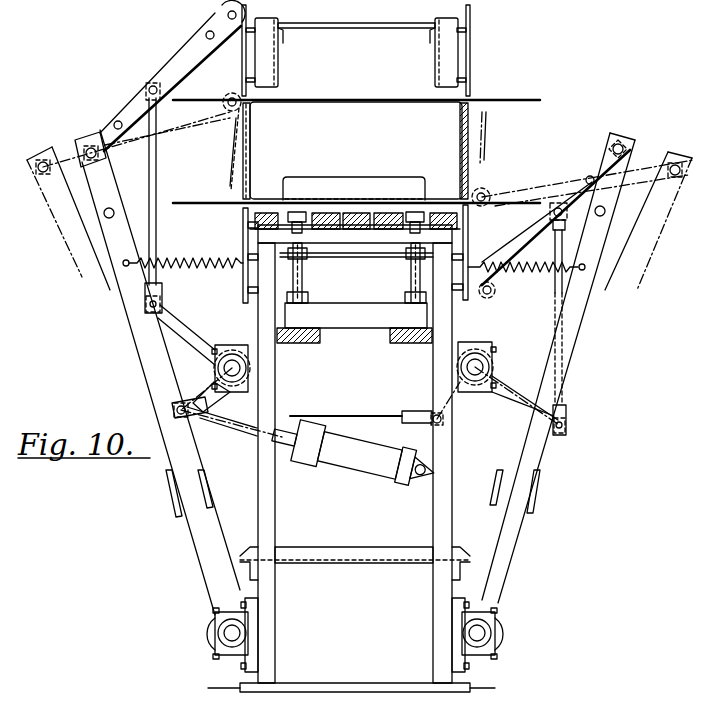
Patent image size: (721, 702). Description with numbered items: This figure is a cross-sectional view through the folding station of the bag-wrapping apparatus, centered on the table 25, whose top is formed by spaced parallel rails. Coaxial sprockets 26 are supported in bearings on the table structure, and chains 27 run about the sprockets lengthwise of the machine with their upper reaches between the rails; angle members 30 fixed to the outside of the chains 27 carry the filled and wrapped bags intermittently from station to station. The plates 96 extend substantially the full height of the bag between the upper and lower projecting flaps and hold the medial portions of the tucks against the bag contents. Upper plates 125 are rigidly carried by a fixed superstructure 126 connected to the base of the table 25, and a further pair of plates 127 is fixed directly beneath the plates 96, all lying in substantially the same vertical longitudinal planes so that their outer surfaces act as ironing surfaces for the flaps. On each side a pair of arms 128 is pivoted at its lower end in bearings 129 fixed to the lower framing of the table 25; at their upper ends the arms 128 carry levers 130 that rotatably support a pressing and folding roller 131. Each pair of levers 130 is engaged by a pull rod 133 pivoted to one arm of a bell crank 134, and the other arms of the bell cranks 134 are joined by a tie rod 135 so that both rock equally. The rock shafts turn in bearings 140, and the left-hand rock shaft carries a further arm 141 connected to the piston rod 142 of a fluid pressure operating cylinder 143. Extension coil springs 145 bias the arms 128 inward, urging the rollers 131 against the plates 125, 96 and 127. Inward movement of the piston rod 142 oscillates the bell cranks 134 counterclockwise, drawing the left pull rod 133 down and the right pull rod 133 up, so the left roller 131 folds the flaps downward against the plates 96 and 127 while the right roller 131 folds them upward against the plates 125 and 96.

The table 25 is at (272, 189).
The sprockets 26 is at (410, 272).
The chains 27 is at (302, 200).
The angle members 30 is at (407, 183).
The plates 96 is at (230, 183).
The upper plates 125 is at (244, 36).
The superstructure 126 is at (318, 30).
The plates 127 is at (245, 242).
The arms 128 is at (196, 551).
The bearings 129 is at (220, 659).
The levers 130 is at (173, 70).
The pressing and folding roller 131 is at (215, 12).
The pull rod 133 is at (158, 171).
The bell crank 134 is at (178, 322).
The tie rod 135 is at (355, 416).
The bearings 140 is at (243, 340).
The arm 141 is at (173, 388).
The piston rod 142 is at (232, 426).
The fluid pressure operating cylinder 143 is at (350, 470).
The extension coil springs 145 is at (354, 242).